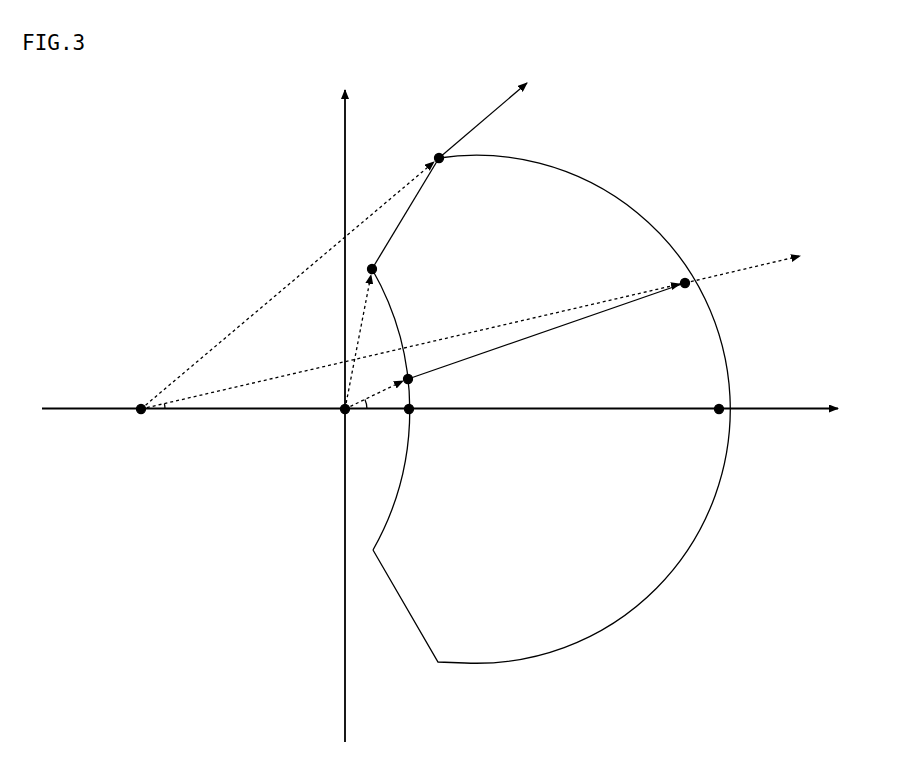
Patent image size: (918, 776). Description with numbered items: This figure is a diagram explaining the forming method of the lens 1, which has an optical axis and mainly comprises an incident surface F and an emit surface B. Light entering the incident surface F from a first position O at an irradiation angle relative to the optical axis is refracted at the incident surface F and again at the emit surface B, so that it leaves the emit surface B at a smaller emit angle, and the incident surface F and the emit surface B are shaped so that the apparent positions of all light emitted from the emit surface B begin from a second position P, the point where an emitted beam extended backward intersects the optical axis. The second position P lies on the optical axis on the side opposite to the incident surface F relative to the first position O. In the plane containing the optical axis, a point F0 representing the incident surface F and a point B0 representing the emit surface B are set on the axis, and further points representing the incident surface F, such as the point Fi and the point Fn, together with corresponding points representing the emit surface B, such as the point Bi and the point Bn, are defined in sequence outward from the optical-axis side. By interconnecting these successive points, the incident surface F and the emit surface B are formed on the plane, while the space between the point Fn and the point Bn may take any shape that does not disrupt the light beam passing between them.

The lens 1 is at (60, 123).
The incident surface F is at (403, 470).
The emit surface B is at (685, 537).
The second position P is at (144, 423).
The first position O is at (335, 424).
The point representing the incident surface F0 is at (425, 426).
The point representing the incident surface Fi is at (427, 389).
The point representing the incident surface Fn is at (393, 270).
The point representing the emit surface B0 is at (738, 425).
The point representing the emit surface Bi is at (690, 267).
The point representing the emit surface Bn is at (428, 141).